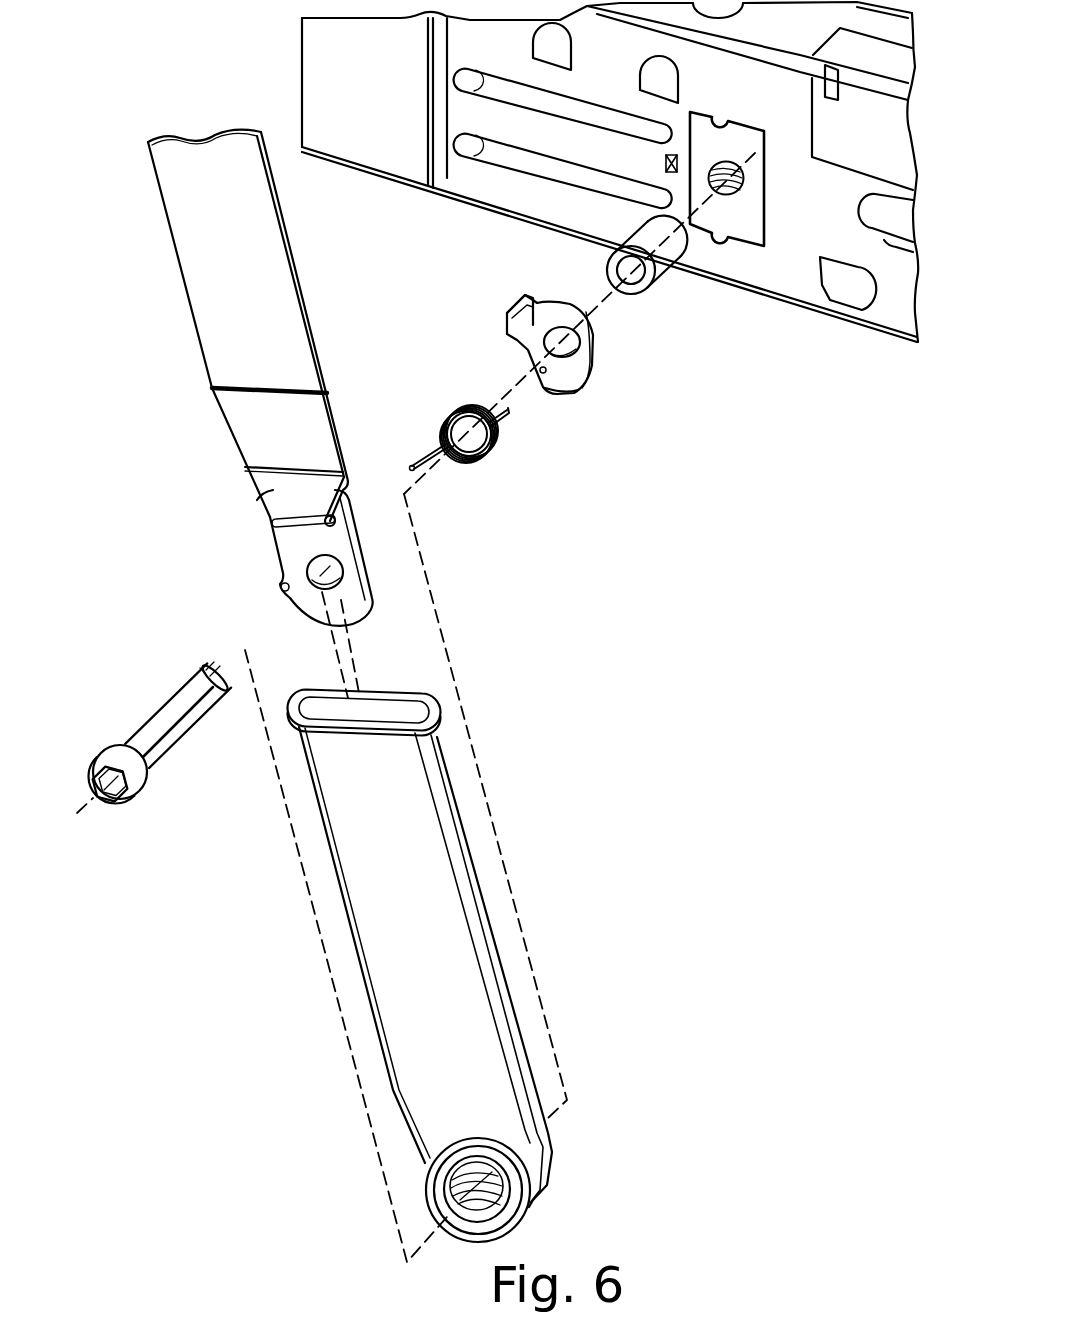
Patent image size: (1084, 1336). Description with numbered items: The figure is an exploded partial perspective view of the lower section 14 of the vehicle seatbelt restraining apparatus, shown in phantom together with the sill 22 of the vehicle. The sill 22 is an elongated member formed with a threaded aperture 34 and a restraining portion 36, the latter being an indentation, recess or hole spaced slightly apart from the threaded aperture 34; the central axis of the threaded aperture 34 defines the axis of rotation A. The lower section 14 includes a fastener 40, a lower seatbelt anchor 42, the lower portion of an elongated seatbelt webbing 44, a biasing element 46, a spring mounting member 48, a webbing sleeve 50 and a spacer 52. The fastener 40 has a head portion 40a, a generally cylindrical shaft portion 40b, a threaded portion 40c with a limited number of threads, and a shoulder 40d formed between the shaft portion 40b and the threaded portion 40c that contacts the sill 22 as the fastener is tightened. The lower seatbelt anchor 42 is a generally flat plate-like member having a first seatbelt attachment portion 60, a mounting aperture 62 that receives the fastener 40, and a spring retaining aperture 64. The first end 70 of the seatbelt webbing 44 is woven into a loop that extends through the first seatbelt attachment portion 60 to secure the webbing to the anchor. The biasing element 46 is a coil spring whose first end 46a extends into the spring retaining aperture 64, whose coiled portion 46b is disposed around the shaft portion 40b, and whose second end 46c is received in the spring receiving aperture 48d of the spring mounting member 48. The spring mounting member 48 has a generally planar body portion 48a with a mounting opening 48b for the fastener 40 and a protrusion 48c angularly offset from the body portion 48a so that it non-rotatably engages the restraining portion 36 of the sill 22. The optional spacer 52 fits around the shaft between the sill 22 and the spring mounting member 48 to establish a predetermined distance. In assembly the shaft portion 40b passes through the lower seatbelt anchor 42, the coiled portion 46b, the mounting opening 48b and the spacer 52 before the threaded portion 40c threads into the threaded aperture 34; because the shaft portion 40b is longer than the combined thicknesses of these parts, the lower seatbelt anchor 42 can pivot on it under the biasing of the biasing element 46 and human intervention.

The lower section 14 is at (195, 572).
The sill 22 is at (792, 258).
The threaded aperture 34 is at (712, 190).
The restraining portion 36 is at (669, 170).
The fastener 40 is at (158, 749).
The head portion 40a is at (108, 798).
The shaft portion 40b is at (157, 747).
The threaded portion 40c is at (208, 670).
The shoulder 40d is at (200, 672).
The lower seatbelt anchor 42 is at (317, 584).
The seatbelt webbing 44 is at (239, 328).
The biasing element 46 is at (467, 446).
The first end 46a is at (412, 462).
The coiled portion 46b is at (449, 414).
The second end 46c is at (505, 437).
The spring mounting member 48 is at (568, 360).
The body portion 48a is at (594, 354).
The mounting opening 48b is at (578, 368).
The protrusion 48c is at (521, 299).
The spring receiving aperture 48d is at (553, 397).
The webbing sleeve 50 is at (372, 917).
The spacer 52 is at (678, 278).
The first seatbelt attachment portion 60 is at (325, 520).
The mounting aperture 62 is at (308, 563).
The spring retaining aperture 64 is at (282, 592).
The first end 70 is at (257, 500).
The axis of rotation A is at (514, 384).